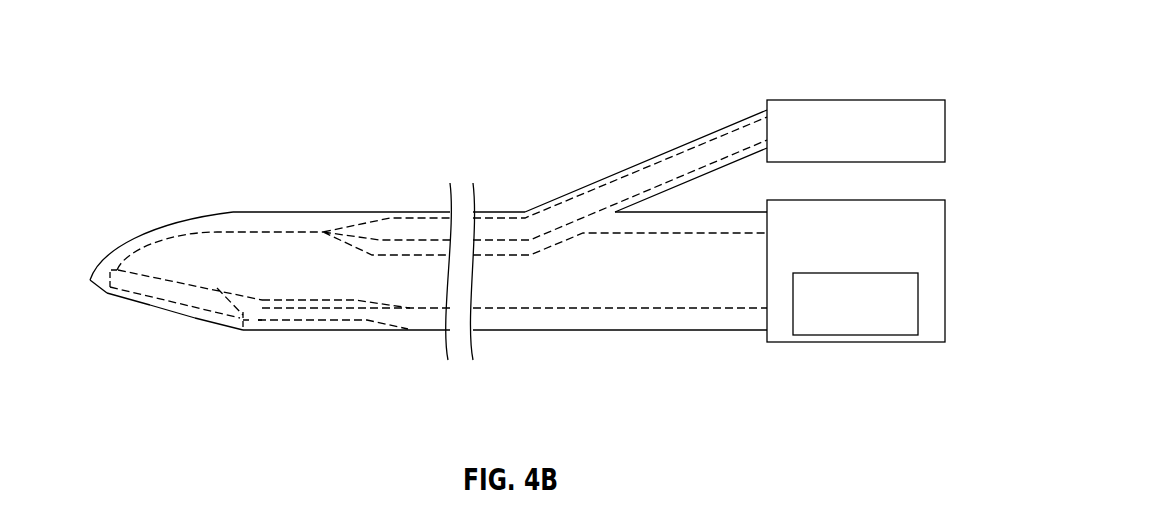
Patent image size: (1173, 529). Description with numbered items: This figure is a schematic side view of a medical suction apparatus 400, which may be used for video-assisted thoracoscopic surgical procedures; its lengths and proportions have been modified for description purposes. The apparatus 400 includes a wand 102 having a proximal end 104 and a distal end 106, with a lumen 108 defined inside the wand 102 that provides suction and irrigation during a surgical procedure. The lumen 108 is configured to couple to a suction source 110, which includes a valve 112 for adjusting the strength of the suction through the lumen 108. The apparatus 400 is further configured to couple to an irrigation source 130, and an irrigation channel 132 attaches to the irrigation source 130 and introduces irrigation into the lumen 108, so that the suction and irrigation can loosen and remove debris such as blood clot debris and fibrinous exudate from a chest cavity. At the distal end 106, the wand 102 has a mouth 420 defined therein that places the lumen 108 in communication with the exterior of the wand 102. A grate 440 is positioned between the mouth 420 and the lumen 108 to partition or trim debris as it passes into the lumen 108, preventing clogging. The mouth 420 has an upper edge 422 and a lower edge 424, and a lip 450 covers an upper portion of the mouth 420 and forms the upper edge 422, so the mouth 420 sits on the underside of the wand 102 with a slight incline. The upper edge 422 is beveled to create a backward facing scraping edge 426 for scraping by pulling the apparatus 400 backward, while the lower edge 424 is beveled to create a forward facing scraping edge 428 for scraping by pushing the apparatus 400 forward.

The medical suction apparatus 400 is at (227, 31).
The wand 102 is at (412, 323).
The proximal end 104 is at (780, 298).
The distal end 106 is at (84, 268).
The lumen 108 is at (312, 244).
The suction source 110 is at (920, 200).
The valve 112 is at (918, 322).
The irrigation source 130 is at (920, 100).
The irrigation channel 132 is at (664, 166).
The mouth 420 is at (194, 331).
The upper edge 422 is at (107, 293).
The lower edge 424 is at (217, 283).
The backward facing scraping edge 426 is at (112, 310).
The forward facing scraping edge 428 is at (245, 340).
The grate 440 is at (153, 288).
The lip 450 is at (233, 212).